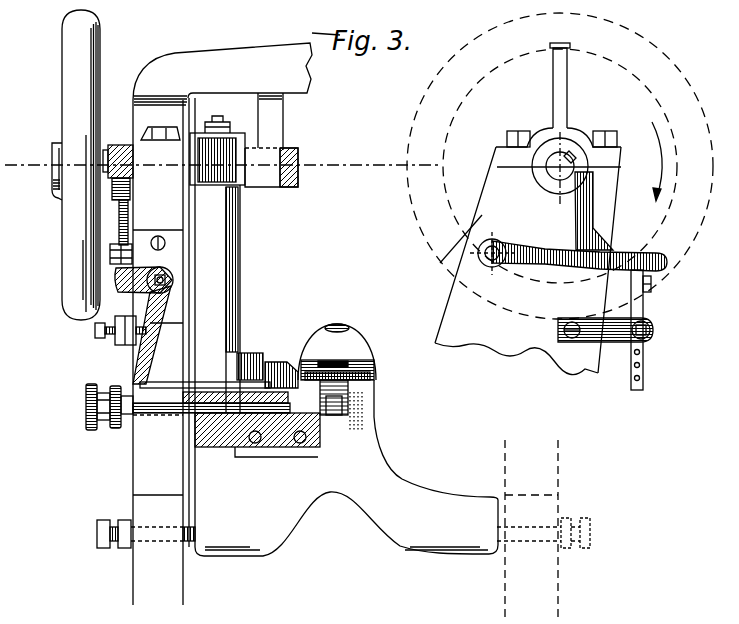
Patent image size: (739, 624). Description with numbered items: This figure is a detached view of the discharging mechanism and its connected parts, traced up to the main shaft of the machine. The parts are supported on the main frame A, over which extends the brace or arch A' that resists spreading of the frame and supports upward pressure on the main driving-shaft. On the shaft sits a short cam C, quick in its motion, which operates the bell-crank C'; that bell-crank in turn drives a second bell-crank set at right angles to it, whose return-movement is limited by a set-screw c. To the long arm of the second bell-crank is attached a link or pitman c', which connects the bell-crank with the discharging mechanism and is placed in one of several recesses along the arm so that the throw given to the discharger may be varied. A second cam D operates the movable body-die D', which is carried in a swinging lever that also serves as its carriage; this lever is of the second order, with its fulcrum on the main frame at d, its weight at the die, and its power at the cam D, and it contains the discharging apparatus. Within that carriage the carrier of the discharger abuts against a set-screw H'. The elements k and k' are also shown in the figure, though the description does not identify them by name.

The main frame A is at (377, 357).
The brace or arch A' is at (351, 115).
The cam C is at (385, 190).
The bell-crank C' is at (131, 231).
The set-screw c is at (380, 333).
The link or pitman c' is at (205, 375).
The cam D is at (219, 148).
The movable body-die D' is at (361, 405).
The set-screw H' is at (169, 407).
The pivot or fulcrum d is at (339, 533).
The block k is at (250, 357).
The wedge k' is at (281, 361).